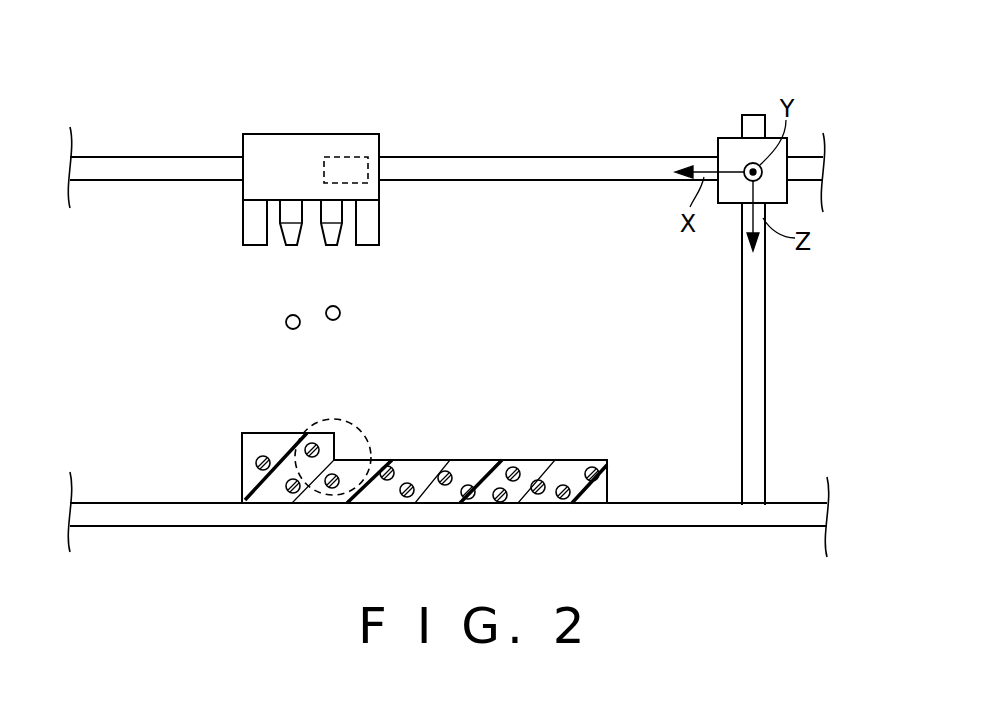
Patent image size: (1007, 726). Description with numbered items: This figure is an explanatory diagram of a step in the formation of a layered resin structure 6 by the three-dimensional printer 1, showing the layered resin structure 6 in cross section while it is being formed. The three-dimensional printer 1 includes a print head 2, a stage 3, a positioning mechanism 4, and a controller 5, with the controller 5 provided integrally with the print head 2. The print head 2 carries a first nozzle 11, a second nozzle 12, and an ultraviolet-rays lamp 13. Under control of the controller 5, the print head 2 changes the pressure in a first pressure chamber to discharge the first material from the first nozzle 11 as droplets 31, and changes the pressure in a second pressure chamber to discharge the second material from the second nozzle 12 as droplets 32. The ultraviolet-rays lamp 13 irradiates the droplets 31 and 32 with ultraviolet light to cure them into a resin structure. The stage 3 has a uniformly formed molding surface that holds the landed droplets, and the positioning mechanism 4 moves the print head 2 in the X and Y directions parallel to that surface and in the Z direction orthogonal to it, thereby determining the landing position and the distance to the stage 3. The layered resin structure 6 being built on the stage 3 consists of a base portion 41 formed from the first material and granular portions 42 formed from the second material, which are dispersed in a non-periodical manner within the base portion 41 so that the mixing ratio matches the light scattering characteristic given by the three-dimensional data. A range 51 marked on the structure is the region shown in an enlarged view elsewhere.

The 3D printer 1 is at (704, 76).
The print head 2 is at (373, 134).
The stage 3 is at (679, 503).
The positioning mechanism 4 is at (632, 157).
The controller 5 is at (337, 157).
The layered resin structure 6 is at (424, 463).
The first nozzle 11 is at (292, 240).
The second nozzle 12 is at (333, 236).
The ultraviolet-rays lamp 13 is at (247, 226).
The droplets 31 is at (290, 330).
The droplets 32 is at (336, 320).
The base portion 41 is at (477, 460).
The granular portions 42 is at (538, 494).
The range 51 is at (372, 434).